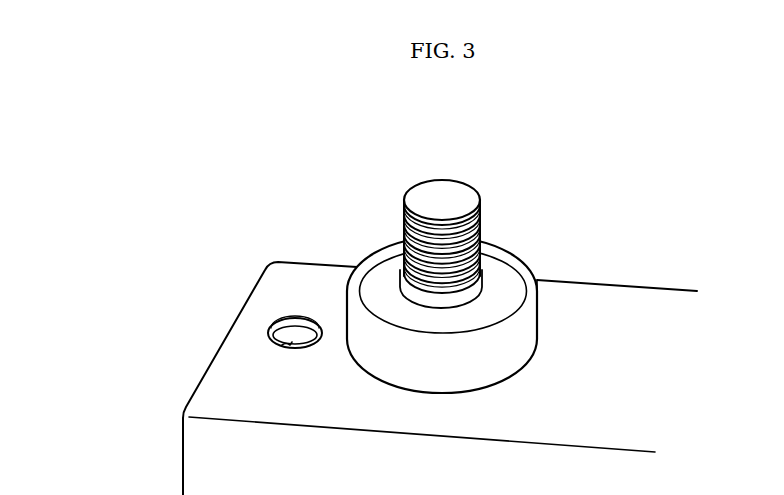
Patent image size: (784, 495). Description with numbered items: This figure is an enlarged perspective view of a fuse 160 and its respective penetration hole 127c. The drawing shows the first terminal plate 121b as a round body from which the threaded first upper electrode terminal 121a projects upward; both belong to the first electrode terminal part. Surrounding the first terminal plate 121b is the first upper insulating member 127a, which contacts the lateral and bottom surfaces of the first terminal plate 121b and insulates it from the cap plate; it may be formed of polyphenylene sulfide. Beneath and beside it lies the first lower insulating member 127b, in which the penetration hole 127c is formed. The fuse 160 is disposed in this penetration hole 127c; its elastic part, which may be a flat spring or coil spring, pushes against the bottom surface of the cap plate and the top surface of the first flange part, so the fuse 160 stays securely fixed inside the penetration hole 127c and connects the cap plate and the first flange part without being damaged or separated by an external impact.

The first upper electrode terminal 121a is at (442, 194).
The first terminal plate 121b is at (384, 268).
The first upper insulating member 127a is at (541, 278).
The first lower insulating member 127b is at (235, 394).
The penetration hole 127c is at (285, 345).
The fuse 160 is at (283, 322).